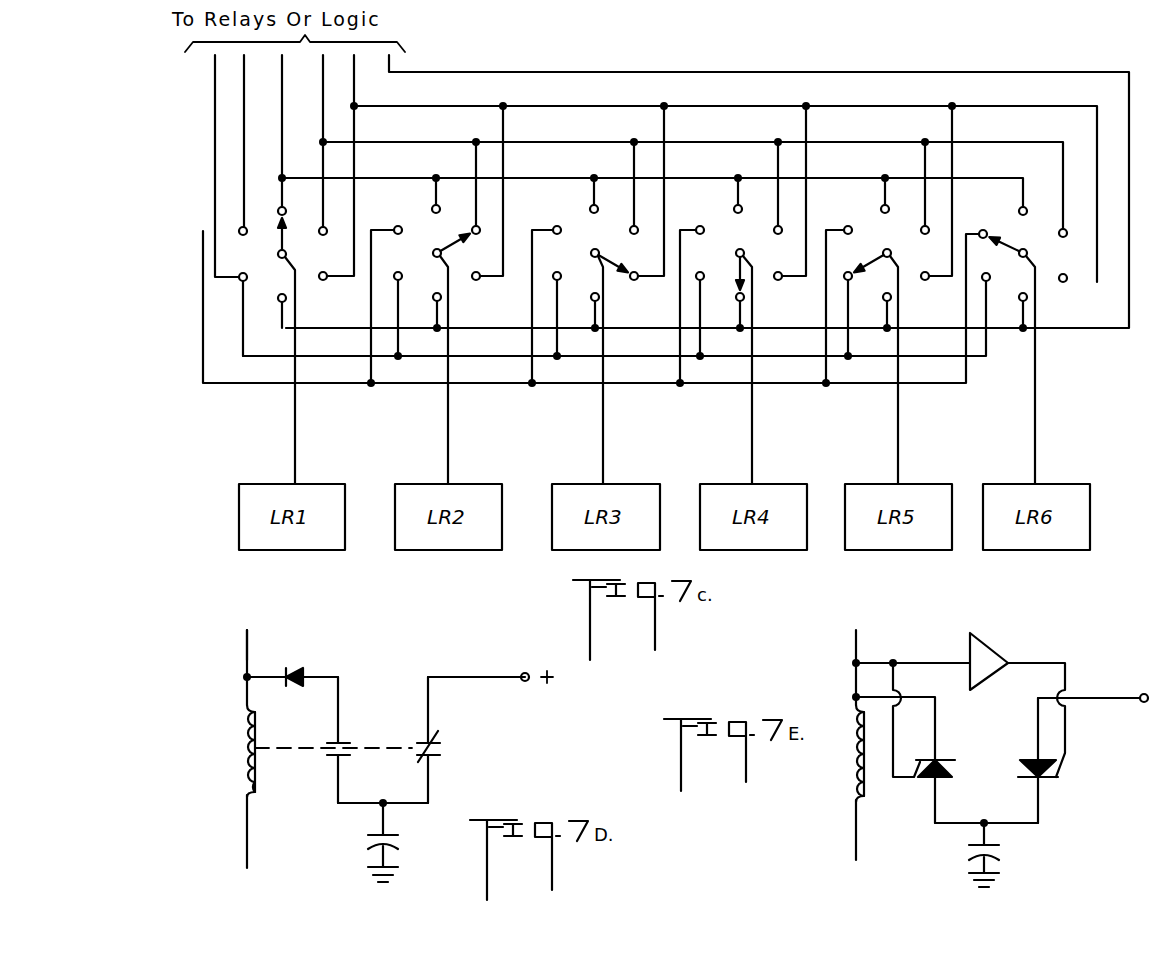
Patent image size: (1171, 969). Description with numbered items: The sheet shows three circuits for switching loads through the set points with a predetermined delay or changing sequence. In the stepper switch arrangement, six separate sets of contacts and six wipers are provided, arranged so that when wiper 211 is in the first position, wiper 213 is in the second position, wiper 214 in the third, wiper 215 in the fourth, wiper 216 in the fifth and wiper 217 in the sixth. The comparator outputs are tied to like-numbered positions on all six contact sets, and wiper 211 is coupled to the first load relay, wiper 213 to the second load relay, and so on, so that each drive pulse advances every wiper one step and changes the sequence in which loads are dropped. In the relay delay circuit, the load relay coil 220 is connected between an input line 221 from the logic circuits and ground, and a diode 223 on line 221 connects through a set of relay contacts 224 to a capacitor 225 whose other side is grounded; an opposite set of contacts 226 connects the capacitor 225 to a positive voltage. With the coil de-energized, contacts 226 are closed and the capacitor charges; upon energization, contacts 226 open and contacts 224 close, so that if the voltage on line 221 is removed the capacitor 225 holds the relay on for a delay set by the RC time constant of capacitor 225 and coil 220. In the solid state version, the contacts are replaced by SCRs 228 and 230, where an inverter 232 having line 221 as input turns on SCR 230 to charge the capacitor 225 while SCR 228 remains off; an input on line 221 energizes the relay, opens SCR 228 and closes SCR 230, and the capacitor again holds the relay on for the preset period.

In FIG. 7C, the wiper 211 is at (284, 238).
In FIG. 7C, the wiper 213 is at (449, 253).
In FIG. 7C, the wiper 214 is at (607, 258).
In FIG. 7C, the wiper 215 is at (740, 274).
In FIG. 7C, the wiper 216 is at (872, 257).
In FIG. 7C, the wiper 217 is at (1001, 237).
In FIG. 7D, the load relay coil 220 is at (235, 763).
In FIG. 7E, the load relay coil 220 is at (847, 783).
In FIG. 7D, the input line 221 is at (248, 643).
In FIG. 7D, the diode 223 is at (300, 670).
In FIG. 7D, the relay contacts 224 is at (342, 740).
In FIG. 7D, the capacitor 225 is at (368, 835).
In FIG. 7D, the opposite relay contacts 226 is at (447, 748).
In FIG. 7E, the SCR 228 is at (942, 760).
In FIG. 7E, the SCR 230 is at (1027, 771).
In FIG. 7E, the inverter 232 is at (990, 647).